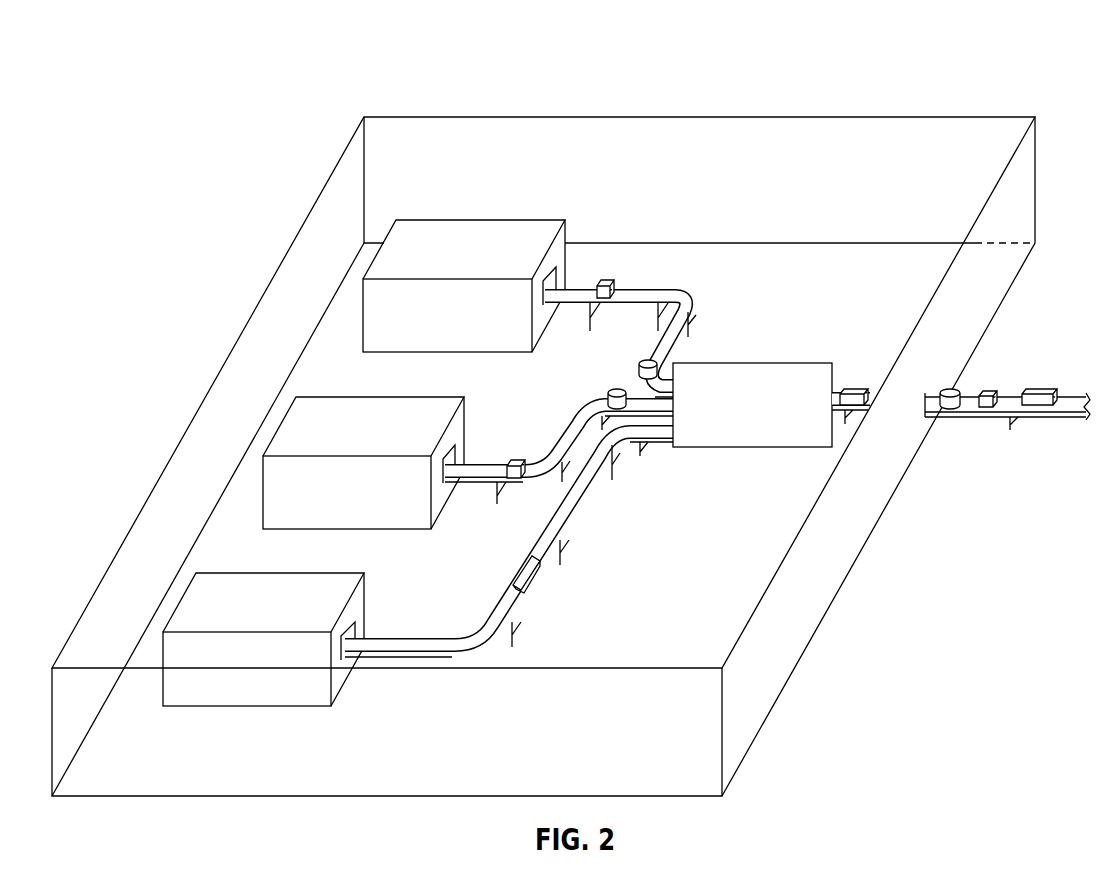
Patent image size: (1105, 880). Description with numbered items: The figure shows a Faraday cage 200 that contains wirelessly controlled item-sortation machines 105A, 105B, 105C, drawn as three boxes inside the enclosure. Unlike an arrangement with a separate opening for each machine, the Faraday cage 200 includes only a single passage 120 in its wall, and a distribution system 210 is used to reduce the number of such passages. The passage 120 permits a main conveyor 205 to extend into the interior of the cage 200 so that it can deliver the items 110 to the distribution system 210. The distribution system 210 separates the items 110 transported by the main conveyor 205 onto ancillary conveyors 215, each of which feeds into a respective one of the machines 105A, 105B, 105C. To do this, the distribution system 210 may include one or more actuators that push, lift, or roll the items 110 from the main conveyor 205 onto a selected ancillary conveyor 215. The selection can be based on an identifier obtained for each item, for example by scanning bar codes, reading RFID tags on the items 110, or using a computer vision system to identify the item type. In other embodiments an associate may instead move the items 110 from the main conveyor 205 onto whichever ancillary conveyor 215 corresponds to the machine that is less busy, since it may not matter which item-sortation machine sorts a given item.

The Faraday cage 200 is at (700, 117).
The wirelessly controlled item-sortation machine 105A is at (482, 220).
The wirelessly controlled item-sortation machine 105B is at (382, 396).
The wirelessly controlled item-sortation machine 105C is at (282, 572).
The items 110 is at (512, 460).
The passage 120 is at (935, 395).
The main conveyor 205 is at (1004, 420).
The distribution system 210 is at (770, 363).
The ancillary conveyors 215 is at (655, 394).